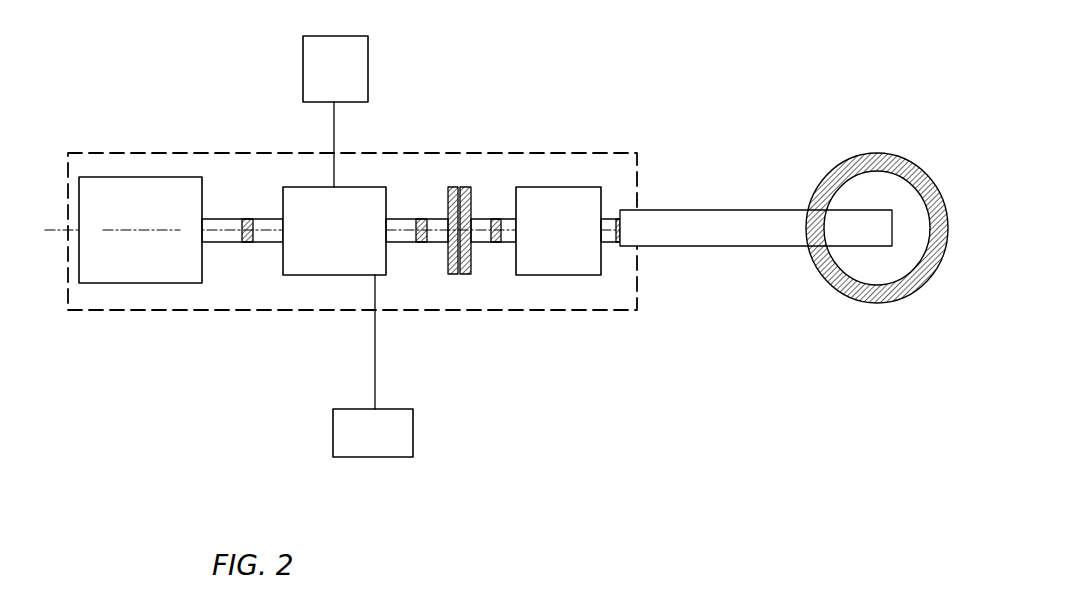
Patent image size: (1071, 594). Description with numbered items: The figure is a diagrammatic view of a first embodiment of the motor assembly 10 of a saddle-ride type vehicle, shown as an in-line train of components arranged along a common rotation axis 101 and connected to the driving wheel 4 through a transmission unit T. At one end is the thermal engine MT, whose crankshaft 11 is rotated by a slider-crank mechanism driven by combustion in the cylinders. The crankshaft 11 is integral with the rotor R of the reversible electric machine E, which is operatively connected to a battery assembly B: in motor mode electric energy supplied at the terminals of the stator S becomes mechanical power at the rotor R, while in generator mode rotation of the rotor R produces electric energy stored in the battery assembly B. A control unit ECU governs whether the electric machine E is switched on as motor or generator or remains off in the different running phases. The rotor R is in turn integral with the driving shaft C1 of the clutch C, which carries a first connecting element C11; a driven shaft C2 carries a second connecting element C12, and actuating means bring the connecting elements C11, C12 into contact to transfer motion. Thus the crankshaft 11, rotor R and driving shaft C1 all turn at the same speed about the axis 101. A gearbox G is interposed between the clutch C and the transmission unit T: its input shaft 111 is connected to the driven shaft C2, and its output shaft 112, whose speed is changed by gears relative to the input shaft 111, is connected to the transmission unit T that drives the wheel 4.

The motor assembly 10 is at (136, 144).
The crankshaft 11 is at (226, 237).
The driving wheel 4 is at (848, 165).
The common rotation axis 101 is at (674, 220).
The input shaft 111 is at (503, 240).
The output shaft 112 is at (609, 222).
The thermal engine MT is at (140, 230).
The reversible electric machine E is at (334, 231).
The gearbox G is at (558, 231).
The battery assembly B is at (335, 111).
The control unit ECU is at (373, 366).
The rotor R is at (270, 226).
The stator S is at (330, 275).
The clutch C is at (480, 209).
The driving shaft C1 is at (434, 224).
The driven shaft C2 is at (476, 236).
The first connecting element C11 is at (452, 262).
The second connecting element C12 is at (462, 190).
The transmission unit T is at (708, 247).